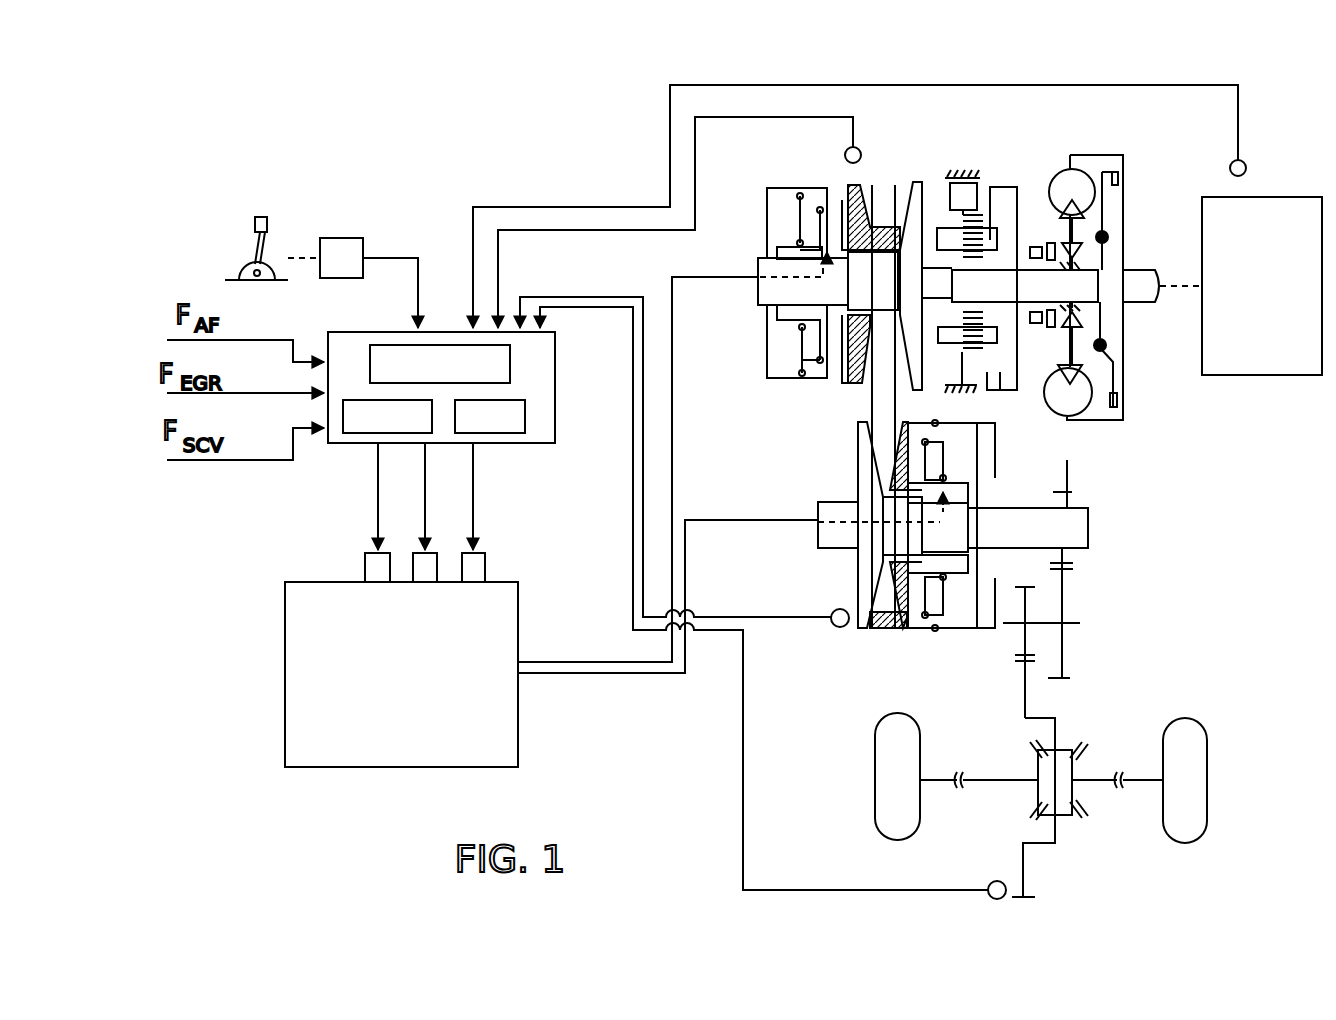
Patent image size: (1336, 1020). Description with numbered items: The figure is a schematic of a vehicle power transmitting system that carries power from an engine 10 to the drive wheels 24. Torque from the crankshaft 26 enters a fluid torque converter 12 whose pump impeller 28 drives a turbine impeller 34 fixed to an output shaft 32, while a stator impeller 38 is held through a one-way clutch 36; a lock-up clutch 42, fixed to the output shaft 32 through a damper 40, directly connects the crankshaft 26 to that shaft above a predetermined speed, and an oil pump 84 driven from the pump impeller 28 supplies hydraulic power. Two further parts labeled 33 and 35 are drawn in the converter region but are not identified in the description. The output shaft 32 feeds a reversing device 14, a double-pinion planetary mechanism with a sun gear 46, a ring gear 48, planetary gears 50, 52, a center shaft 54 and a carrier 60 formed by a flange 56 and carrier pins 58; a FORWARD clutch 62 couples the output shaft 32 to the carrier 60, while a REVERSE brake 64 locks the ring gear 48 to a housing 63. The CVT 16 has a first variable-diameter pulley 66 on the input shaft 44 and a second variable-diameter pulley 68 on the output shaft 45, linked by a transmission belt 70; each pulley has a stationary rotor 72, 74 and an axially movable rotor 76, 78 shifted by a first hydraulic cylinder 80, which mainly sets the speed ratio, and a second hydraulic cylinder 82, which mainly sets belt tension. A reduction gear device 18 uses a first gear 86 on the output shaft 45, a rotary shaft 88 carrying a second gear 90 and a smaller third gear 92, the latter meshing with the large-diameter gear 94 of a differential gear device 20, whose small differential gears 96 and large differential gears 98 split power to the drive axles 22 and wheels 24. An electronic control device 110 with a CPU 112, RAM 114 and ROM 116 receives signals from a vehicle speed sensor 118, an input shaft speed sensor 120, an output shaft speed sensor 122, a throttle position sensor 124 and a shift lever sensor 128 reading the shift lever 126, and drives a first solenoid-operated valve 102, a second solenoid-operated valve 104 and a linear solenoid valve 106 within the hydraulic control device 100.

The engine 10 is at (1243, 375).
The fluid torque converter 12 is at (1143, 427).
The reversing device 14 is at (1005, 395).
The continuously variable transmission 16 is at (826, 633).
The reduction gear device 18 is at (1105, 648).
The differential gear device 20 is at (1072, 850).
The drive axles 22 is at (962, 782).
The drive wheels 24 is at (888, 737).
The crankshaft 26 is at (1138, 287).
The pump impeller 28 is at (1057, 167).
The output shaft 32 is at (1088, 292).
The lock-up clutch lever 33 is at (1118, 378).
The turbine impeller 34 is at (1083, 180).
The fluid coupling housing 35 is at (1093, 410).
The one-way clutch 36 is at (1120, 260).
The stator impeller 38 is at (1105, 210).
The damper 40 is at (1108, 347).
The lock-up clutch 42 is at (1120, 402).
The input shaft 44 is at (760, 293).
The output shaft 45 is at (818, 537).
The sun gear 46 is at (975, 265).
The ring gear 48 is at (982, 215).
The planetary gear 50 is at (950, 243).
The planetary gear 52 is at (975, 247).
The center shaft 54 is at (945, 268).
The flange 56 is at (945, 286).
The carrier pins 58 is at (1025, 284).
The carrier 60 is at (957, 347).
The FORWARD clutch 62 is at (1008, 190).
The housing 63 is at (960, 175).
The REVERSE brake 64 is at (950, 253).
The first variable-diameter pulley 66 is at (838, 183).
The second variable-diameter pulley 68 is at (852, 636).
The transmission belt 70 is at (880, 628).
The stationary rotor 72 is at (913, 180).
The stationary rotor 74 is at (858, 583).
The axially movable rotor 76 is at (850, 385).
The axially movable rotor 78 is at (905, 628).
The first hydraulic cylinder 80 is at (766, 188).
The second hydraulic cylinder 82 is at (950, 637).
The oil pump 84 is at (993, 310).
The first gear 86 is at (1067, 490).
The rotary shaft 88 is at (1083, 623).
The second gear 90 is at (1067, 572).
The third gear 92 is at (1027, 565).
The large-diameter gear 94 is at (1030, 897).
The small differential gears 96 is at (1073, 748).
The large differential gears 98 is at (1083, 757).
The hydraulic control device 100 is at (505, 752).
The first solenoid-operated valve 102 is at (385, 550).
The second solenoid-operated valve 104 is at (432, 550).
The linear solenoid valve 106 is at (482, 550).
The electronic control device 110 is at (540, 410).
The central processing unit 112 is at (505, 360).
The random-access memory 114 is at (352, 432).
The read-only memory 116 is at (480, 434).
The VEHICLE speed sensor 118 is at (988, 885).
The INPUT SHAFT speed sensor 120 is at (861, 150).
The OUTPUT SHAFT speed sensor 122 is at (833, 613).
The THROTTLE POSITION sensor 124 is at (1248, 168).
The shift lever 126 is at (258, 246).
The SHIFT LEVER sensor 128 is at (345, 248).